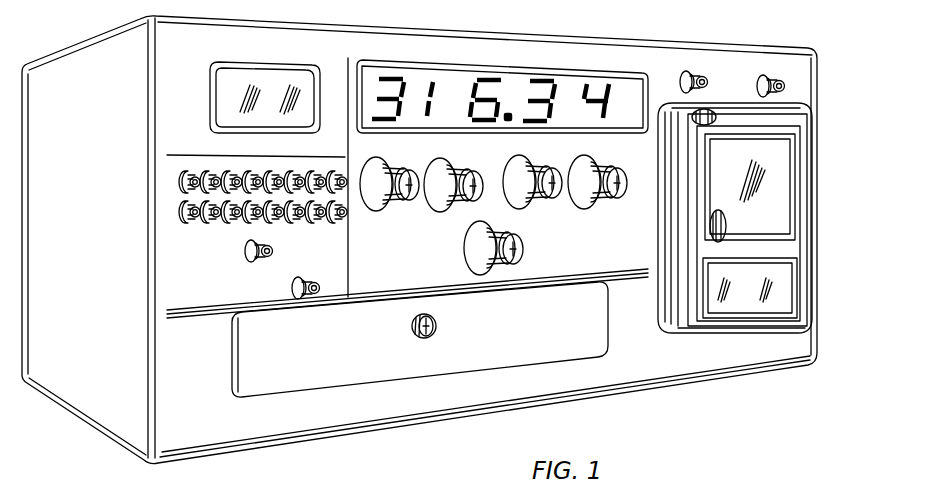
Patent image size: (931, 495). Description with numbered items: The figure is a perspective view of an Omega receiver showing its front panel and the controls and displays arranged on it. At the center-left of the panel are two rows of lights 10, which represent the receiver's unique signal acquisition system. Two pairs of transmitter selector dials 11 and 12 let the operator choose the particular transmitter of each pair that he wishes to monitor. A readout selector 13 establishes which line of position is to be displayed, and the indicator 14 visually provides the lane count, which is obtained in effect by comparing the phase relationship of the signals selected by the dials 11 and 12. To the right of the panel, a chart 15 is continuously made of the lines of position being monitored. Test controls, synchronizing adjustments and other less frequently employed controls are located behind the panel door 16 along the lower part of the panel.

The two rows of lights 10 is at (218, 175).
The transmitter selector dials 11 is at (456, 202).
The transmitter selector dials 12 is at (587, 203).
The readout selector 13 is at (490, 269).
The indicator 14 is at (460, 85).
The chart 15 is at (775, 190).
The panel door 16 is at (275, 385).